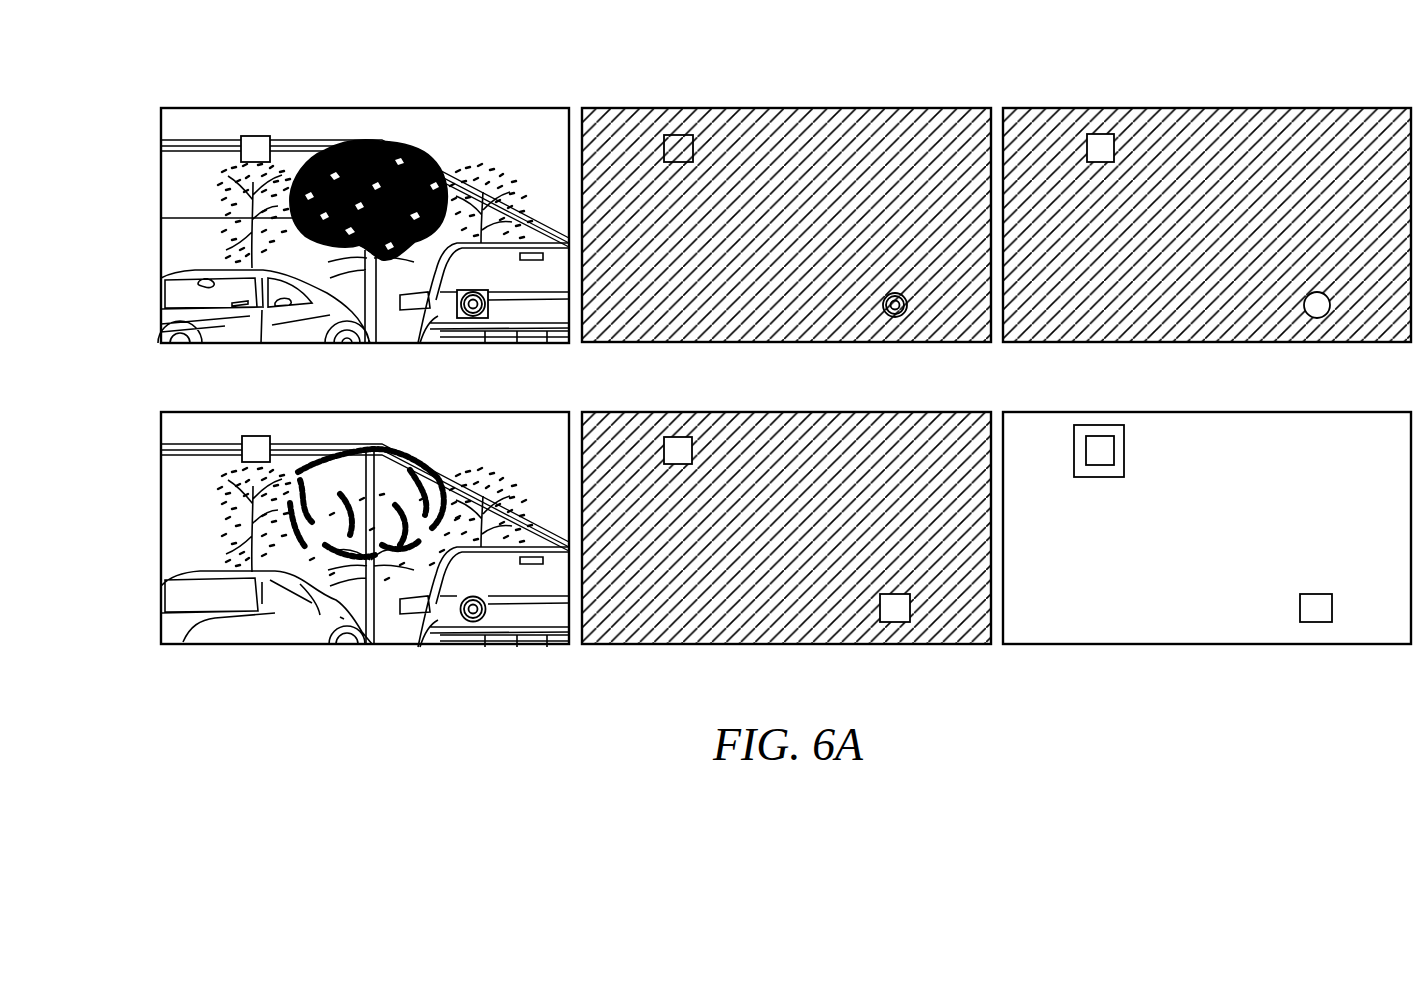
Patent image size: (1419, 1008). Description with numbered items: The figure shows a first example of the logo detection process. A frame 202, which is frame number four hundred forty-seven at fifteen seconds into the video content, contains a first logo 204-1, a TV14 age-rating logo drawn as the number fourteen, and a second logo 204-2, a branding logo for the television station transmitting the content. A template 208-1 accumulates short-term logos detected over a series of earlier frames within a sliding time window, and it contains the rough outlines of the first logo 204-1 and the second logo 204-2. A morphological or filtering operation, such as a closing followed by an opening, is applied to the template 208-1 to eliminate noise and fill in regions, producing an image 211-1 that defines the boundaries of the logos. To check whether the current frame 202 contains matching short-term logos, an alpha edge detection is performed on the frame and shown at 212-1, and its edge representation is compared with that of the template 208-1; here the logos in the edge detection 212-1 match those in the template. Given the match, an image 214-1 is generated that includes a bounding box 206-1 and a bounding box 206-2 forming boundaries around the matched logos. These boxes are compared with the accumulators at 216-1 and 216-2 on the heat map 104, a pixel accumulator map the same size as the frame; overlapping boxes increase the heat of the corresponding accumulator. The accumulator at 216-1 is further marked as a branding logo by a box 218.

The heat map 104 is at (1208, 412).
The frame 202 is at (365, 108).
The first logo 204-1 is at (267, 136).
The second logo 204-2 is at (473, 320).
The bounding box 206-1 is at (240, 148).
The bounding box 206-2 is at (458, 313).
The template 208-1 is at (777, 108).
The image 211-1 is at (1203, 108).
The edge detection 212-1 is at (289, 644).
The image 214-1 is at (788, 412).
The accumulator 216-1 is at (1100, 436).
The accumulator 216-2 is at (1317, 622).
The box 218 is at (1074, 450).